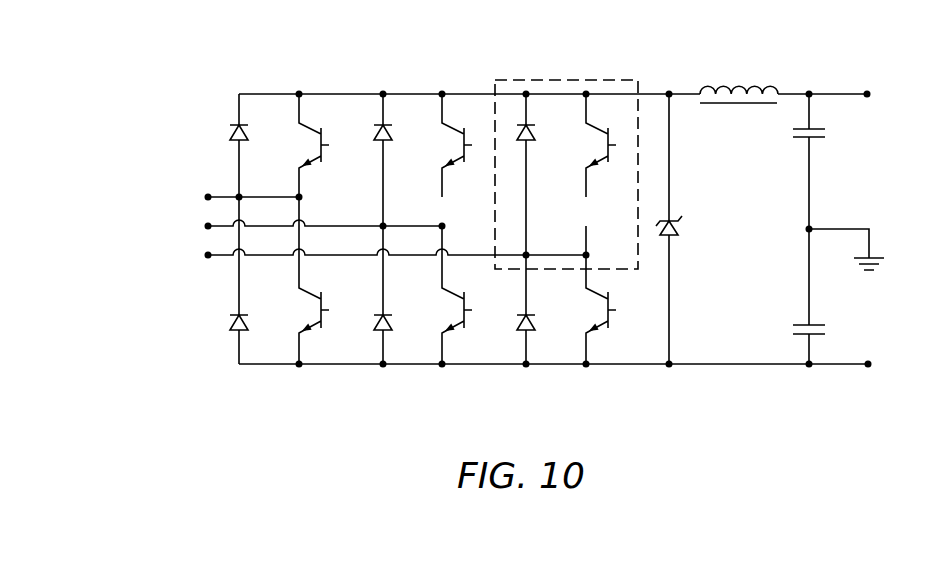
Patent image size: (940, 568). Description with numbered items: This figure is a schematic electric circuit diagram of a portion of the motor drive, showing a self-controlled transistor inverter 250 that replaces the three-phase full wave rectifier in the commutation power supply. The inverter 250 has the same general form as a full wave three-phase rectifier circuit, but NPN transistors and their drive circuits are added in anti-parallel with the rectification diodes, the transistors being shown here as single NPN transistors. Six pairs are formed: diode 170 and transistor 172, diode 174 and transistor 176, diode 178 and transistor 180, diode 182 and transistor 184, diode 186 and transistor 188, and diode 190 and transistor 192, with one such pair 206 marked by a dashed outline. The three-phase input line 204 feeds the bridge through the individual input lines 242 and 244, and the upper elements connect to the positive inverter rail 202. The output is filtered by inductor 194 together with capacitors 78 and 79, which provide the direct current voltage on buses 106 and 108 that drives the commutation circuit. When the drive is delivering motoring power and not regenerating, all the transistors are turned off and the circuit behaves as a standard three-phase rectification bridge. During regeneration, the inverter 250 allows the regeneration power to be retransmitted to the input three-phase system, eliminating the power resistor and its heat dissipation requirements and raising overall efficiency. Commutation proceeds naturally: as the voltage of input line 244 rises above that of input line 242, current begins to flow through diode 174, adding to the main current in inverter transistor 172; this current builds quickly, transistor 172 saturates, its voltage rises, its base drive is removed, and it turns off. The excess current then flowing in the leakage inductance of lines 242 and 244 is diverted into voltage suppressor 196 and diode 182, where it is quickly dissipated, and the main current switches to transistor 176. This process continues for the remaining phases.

The diode 170 is at (230, 131).
The transistor 172 is at (326, 135).
The diode 174 is at (374, 133).
The transistor 176 is at (466, 157).
The diode 178 is at (536, 132).
The transistor 180 is at (610, 157).
The diode 182 is at (228, 325).
The transistor 184 is at (324, 317).
The diode 186 is at (372, 320).
The transistor 188 is at (465, 318).
The diode 190 is at (517, 325).
The transistor 192 is at (610, 318).
The inductor 194 is at (738, 90).
The voltage suppressor 196 is at (680, 220).
The positive inverter rail 202 is at (405, 93).
The three-phase input line 204 is at (217, 262).
The pair 206 is at (570, 80).
The input line 242 is at (220, 196).
The input line 244 is at (342, 227).
The transistor inverter 250 is at (356, 410).
The capacitor 78 is at (818, 140).
The capacitor 79 is at (800, 323).
The bus 106 is at (867, 96).
The bus 108 is at (868, 365).